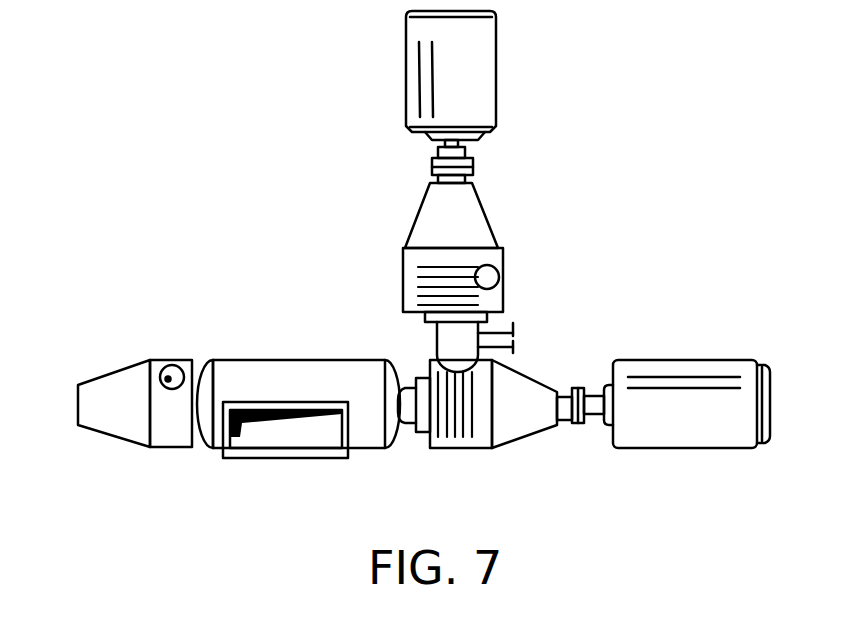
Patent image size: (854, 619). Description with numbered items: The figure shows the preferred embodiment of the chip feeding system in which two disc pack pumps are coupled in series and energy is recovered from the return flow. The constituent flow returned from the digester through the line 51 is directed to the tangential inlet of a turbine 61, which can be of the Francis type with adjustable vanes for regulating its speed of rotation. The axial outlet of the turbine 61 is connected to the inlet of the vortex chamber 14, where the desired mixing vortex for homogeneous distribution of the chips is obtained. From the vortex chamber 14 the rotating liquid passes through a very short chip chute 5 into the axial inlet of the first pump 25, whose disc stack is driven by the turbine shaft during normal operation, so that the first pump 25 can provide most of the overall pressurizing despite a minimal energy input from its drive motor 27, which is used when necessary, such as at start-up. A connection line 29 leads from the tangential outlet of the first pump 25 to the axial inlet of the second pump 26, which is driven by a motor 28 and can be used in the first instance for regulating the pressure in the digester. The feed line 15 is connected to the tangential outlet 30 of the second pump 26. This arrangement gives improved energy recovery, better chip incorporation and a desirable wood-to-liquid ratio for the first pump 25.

The chip chute 5 is at (252, 428).
The vortex chamber 14 is at (365, 437).
The feed line 15 is at (213, 360).
The first pump 25 is at (532, 427).
The second pump 26 is at (425, 226).
The motor 27 is at (715, 360).
The motor 28 is at (406, 114).
The connection line 29 is at (437, 345).
The tangential outlet 30 is at (487, 277).
The line 51 is at (166, 378).
The turbine 61 is at (97, 378).